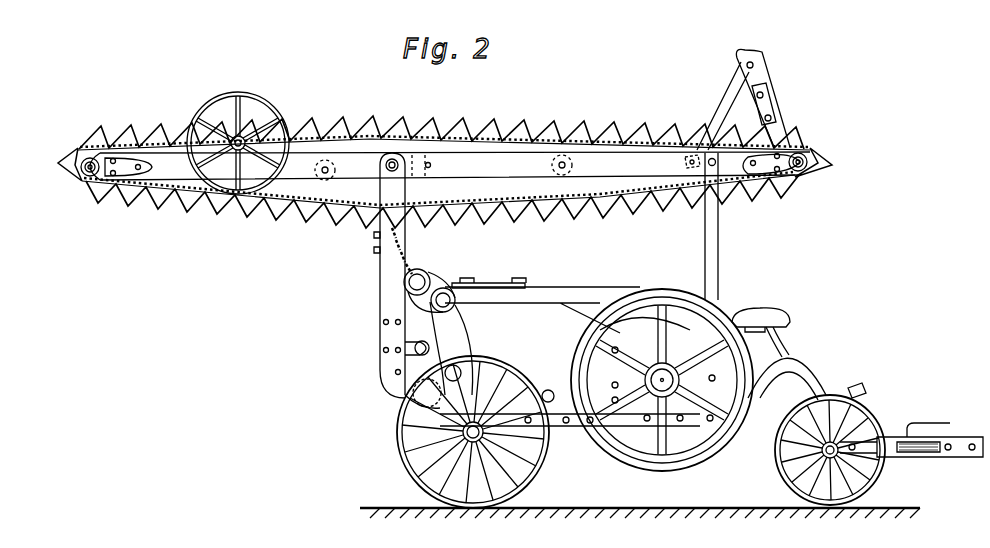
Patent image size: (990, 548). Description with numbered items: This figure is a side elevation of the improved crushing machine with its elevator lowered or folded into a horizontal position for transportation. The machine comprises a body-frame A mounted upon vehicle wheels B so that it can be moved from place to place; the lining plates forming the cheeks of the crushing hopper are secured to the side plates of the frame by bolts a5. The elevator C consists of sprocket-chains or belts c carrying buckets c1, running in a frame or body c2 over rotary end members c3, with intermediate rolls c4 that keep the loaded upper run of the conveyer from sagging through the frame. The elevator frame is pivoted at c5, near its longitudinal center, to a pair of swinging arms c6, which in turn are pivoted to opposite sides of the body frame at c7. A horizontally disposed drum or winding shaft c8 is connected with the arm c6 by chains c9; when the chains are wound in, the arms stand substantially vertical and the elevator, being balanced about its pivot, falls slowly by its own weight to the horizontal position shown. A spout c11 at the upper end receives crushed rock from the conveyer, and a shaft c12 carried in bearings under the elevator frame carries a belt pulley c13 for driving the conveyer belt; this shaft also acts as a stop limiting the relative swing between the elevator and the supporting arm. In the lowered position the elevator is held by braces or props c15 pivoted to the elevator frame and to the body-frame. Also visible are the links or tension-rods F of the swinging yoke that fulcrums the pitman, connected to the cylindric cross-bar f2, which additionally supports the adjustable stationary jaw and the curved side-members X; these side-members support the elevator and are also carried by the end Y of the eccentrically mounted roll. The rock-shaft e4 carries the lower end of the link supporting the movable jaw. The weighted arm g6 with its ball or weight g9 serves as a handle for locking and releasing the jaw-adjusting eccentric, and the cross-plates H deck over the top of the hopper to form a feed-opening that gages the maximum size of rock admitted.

The elevator C is at (605, 135).
The sprocket-chains or belts c is at (330, 210).
The buckets c1 is at (478, 152).
The frame or body c2 is at (460, 160).
The rotary end members c3 is at (97, 158).
The intermediate rolls c4 is at (327, 160).
The pivot c5 is at (393, 160).
The swinging arms c6 is at (386, 272).
The pivot of swinging arms c7 is at (430, 403).
The drum or winding shaft c8 is at (425, 278).
The chains c9 is at (413, 272).
The spout c11 is at (760, 80).
The shaft c12 is at (237, 138).
The belt pulley c13 is at (252, 100).
The braces or props c15 is at (720, 262).
The links or tension-rods F is at (576, 290).
The cross-plates H is at (522, 284).
The cross-bar f2 is at (468, 282).
The curved side-members X is at (466, 333).
The end of eccentric roll Y is at (460, 370).
The weighted arm g6 is at (425, 345).
The ball or weight g9 is at (414, 346).
The rock-shaft e4 is at (546, 390).
The body-frame A is at (540, 352).
The vehicle wheels B is at (398, 432).
The bolts a5 is at (666, 385).